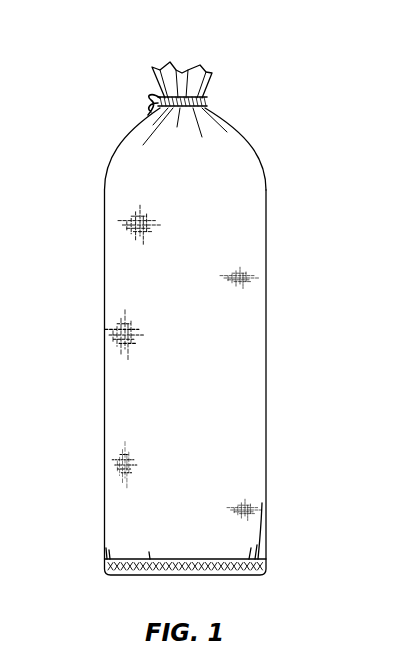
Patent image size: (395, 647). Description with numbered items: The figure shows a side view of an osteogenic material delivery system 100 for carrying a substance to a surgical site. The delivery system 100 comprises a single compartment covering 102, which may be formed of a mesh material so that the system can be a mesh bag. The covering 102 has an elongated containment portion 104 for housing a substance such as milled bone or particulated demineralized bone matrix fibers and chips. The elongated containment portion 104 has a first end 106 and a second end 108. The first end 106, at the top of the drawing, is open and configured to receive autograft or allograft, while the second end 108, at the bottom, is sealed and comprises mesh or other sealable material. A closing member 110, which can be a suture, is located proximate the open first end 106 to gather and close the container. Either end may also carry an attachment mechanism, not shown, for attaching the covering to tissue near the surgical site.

The osteogenic material delivery system 100 is at (48, 235).
The single compartment covering 102 is at (242, 140).
The elongated containment portion 104 is at (267, 338).
The first end 106 is at (190, 60).
The second end 108 is at (223, 577).
The closing member 110 is at (143, 102).